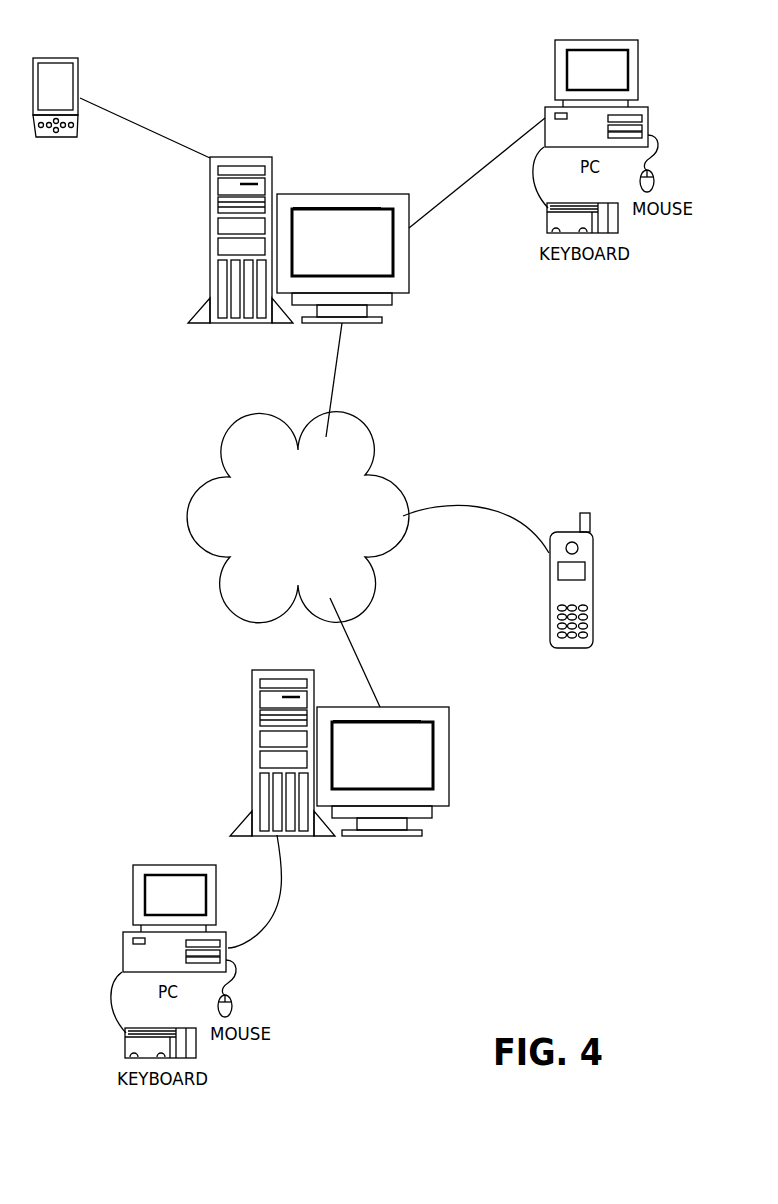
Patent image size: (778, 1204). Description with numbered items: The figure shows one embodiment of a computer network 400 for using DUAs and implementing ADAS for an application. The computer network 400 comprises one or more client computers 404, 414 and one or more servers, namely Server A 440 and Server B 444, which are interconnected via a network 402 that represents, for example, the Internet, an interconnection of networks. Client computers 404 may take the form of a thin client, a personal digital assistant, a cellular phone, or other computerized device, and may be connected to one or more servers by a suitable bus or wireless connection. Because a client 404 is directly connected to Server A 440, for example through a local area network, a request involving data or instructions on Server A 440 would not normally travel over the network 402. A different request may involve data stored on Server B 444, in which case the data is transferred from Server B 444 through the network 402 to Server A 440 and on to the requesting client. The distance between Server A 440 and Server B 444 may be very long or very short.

The computer network 400 is at (447, 42).
The network 402 is at (310, 543).
The client computer 404 is at (80, 88).
The client computer 414 is at (150, 863).
The Server A 440 is at (409, 279).
The Server B 444 is at (452, 791).